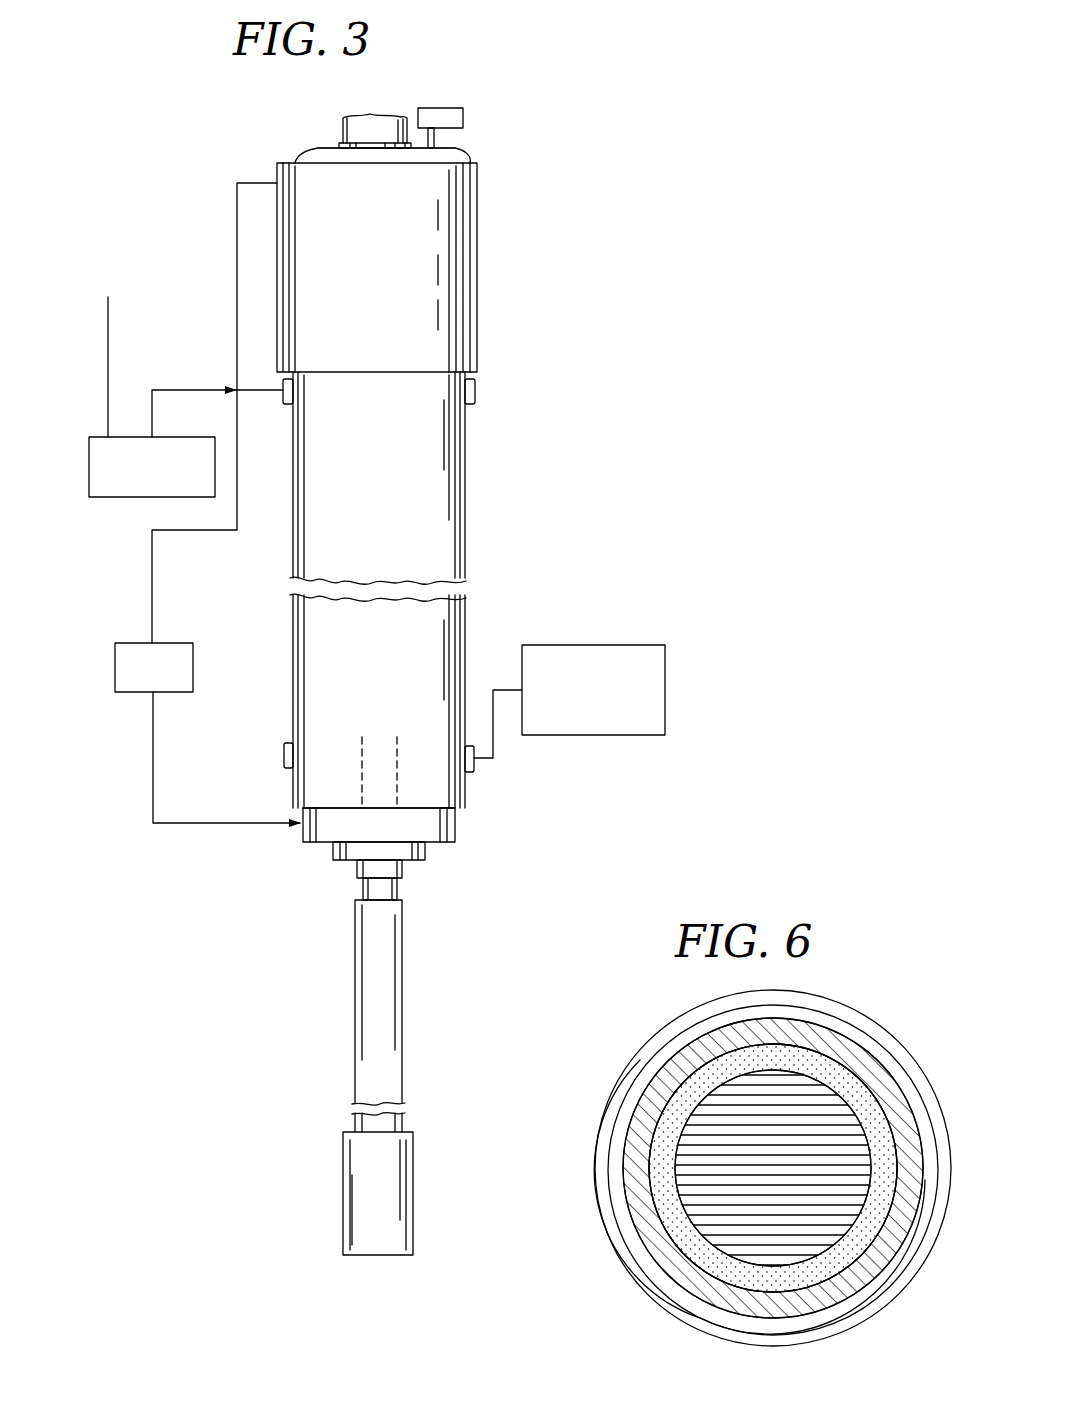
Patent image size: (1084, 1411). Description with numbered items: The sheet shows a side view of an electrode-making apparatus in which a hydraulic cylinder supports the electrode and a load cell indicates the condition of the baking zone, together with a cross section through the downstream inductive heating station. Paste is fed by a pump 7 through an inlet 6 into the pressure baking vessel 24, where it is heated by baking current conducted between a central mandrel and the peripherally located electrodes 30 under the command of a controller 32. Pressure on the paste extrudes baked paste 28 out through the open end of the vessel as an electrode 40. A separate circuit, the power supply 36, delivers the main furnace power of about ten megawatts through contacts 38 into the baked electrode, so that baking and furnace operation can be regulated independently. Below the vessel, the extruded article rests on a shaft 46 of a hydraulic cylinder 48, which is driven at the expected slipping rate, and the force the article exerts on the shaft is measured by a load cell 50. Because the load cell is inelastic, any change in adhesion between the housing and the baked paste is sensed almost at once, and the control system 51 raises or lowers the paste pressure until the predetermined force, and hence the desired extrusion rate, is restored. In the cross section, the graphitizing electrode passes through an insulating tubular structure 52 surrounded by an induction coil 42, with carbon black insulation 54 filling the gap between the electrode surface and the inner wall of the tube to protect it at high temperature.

In FIG. 3, the inlet 6 is at (436, 136).
In FIG. 3, the pump 7 is at (440, 117).
In FIG. 3, the pressure baking vessel 24 is at (376, 259).
In FIG. 3, the baked paste 28 is at (380, 400).
In FIG. 6, the baked paste 28 is at (780, 1222).
In FIG. 3, the peripherally located electrodes 30 is at (477, 396).
In FIG. 3, the controller 32 is at (153, 480).
In FIG. 3, the power supply 36 is at (603, 704).
In FIG. 3, the contacts 38 is at (283, 752).
In FIG. 3, the electrode 40 is at (345, 718).
In FIG. 6, the induction coil 42 is at (848, 1020).
In FIG. 3, the shaft 46 is at (373, 1003).
In FIG. 3, the hydraulic cylinder 48 is at (335, 1150).
In FIG. 3, the load cell 50 is at (440, 823).
In FIG. 3, the control system 51 is at (163, 682).
In FIG. 6, the tubular structure 52 is at (755, 1040).
In FIG. 6, the insulation 54 is at (712, 1078).